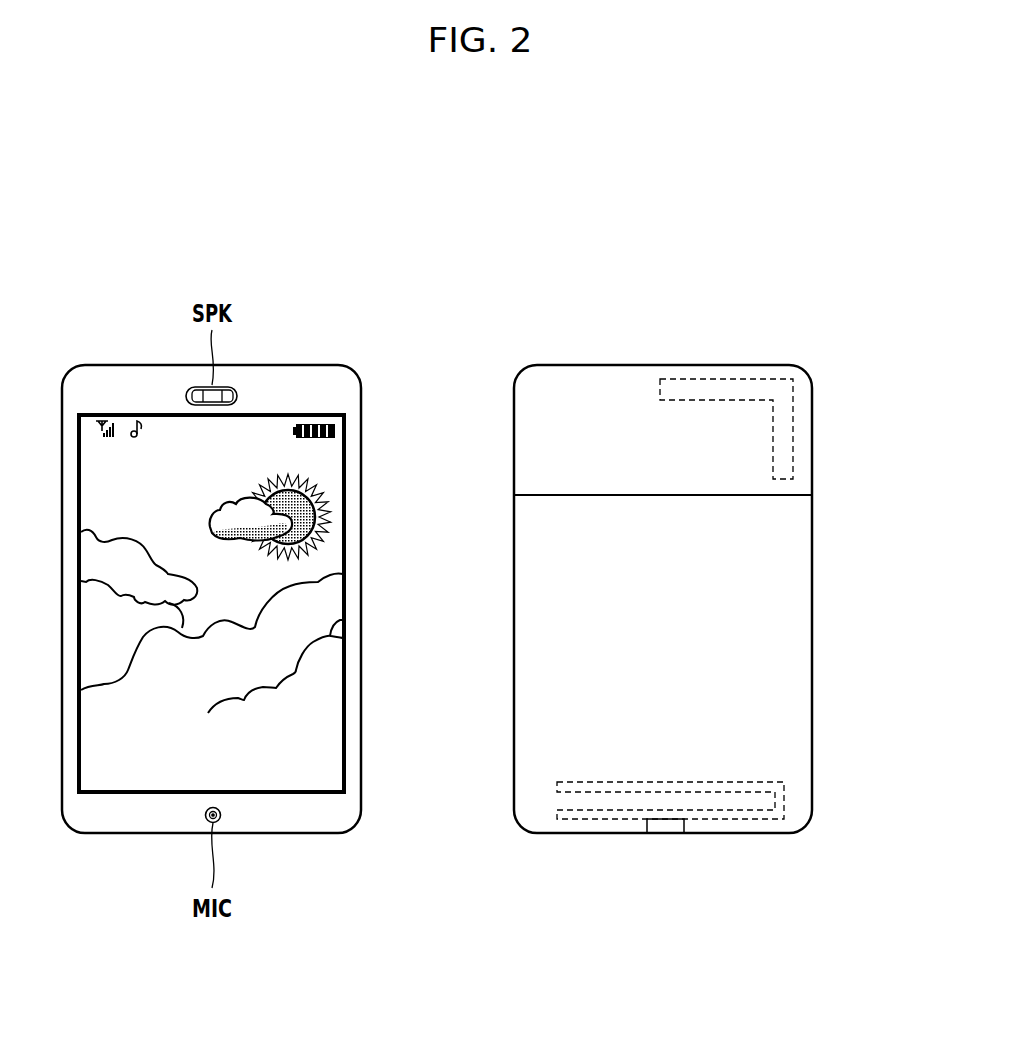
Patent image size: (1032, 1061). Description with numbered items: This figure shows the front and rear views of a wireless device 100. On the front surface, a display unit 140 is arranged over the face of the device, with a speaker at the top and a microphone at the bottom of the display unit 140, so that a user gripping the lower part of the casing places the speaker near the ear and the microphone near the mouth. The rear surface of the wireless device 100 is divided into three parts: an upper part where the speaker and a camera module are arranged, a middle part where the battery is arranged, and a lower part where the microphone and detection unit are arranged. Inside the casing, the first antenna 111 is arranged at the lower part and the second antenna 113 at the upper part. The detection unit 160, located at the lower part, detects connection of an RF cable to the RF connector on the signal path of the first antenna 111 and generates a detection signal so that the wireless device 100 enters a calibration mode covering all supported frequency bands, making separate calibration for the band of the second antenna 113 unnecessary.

The wireless device 100 is at (709, 227).
The first antenna 111 is at (784, 800).
The second antenna 113 is at (736, 379).
The display unit 140 is at (330, 457).
The detection unit 160 is at (663, 834).